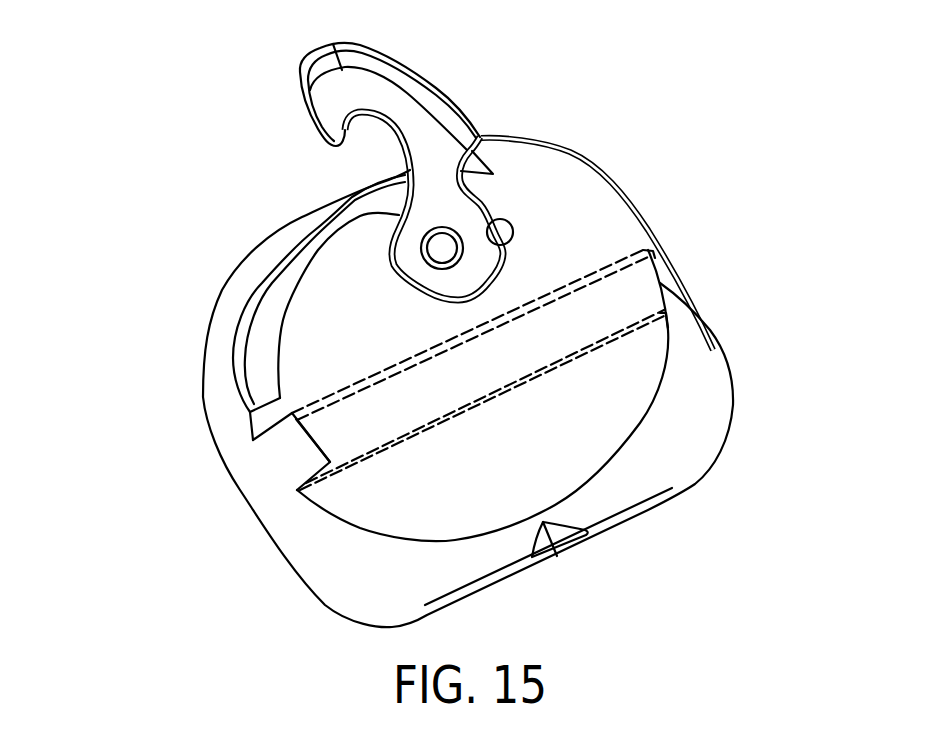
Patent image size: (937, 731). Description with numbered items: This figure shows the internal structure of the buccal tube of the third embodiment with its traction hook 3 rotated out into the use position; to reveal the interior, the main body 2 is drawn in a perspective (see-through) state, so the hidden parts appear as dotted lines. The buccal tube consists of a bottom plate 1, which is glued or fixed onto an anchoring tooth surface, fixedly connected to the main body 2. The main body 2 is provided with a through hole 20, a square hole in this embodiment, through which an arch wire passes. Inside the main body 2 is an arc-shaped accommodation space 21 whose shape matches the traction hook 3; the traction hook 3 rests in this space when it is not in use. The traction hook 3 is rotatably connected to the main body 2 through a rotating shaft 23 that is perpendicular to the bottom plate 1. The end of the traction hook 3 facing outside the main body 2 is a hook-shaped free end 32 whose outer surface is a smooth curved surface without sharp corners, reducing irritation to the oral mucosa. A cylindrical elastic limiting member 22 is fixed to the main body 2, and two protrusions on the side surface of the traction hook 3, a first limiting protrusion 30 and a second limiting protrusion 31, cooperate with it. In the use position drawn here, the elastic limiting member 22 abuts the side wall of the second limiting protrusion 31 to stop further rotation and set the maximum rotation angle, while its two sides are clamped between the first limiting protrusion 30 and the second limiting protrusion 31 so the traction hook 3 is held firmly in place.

The bottom plate 1 is at (367, 572).
The main body 2 is at (630, 373).
The traction hook 3 is at (302, 56).
The through hole 20 is at (660, 287).
The accommodation space 21 is at (277, 287).
The elastic limiting member 22 is at (503, 230).
The rotating shaft 23 is at (435, 248).
The first limiting protrusion 30 is at (470, 263).
The second limiting protrusion 31 is at (480, 204).
The free end 32 is at (330, 113).